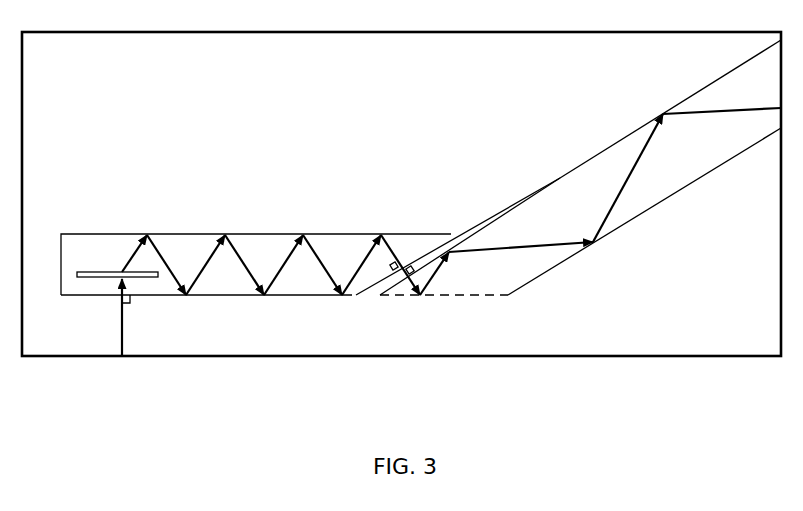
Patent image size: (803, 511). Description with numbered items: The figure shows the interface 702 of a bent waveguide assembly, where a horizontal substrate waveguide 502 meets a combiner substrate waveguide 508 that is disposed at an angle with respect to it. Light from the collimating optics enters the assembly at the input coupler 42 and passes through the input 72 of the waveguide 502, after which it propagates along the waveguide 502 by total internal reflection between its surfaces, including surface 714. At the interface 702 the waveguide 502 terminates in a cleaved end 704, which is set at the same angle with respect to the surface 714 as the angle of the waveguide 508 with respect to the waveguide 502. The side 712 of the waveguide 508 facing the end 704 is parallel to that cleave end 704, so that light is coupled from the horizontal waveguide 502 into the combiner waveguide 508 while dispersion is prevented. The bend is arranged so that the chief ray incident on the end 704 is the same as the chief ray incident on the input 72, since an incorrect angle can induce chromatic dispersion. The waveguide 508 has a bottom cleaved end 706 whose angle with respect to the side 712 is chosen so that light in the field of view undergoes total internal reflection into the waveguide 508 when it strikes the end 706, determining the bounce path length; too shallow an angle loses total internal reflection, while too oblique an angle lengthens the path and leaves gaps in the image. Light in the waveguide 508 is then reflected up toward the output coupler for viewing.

The input coupler 42 is at (87, 279).
The input of waveguide 72 is at (150, 297).
The substrate waveguide 502 is at (264, 233).
The surface 714 is at (245, 297).
The cleaved end 704 is at (368, 291).
The side 712 is at (464, 238).
The interface 702 is at (373, 299).
The cleaved end 706 is at (476, 297).
The substrate waveguide 508 is at (588, 161).